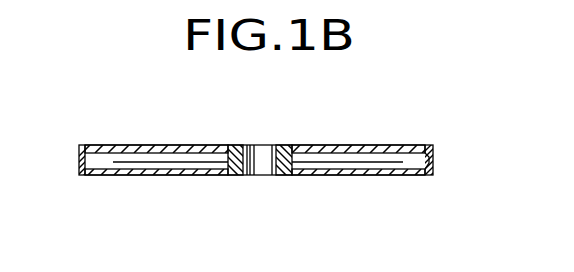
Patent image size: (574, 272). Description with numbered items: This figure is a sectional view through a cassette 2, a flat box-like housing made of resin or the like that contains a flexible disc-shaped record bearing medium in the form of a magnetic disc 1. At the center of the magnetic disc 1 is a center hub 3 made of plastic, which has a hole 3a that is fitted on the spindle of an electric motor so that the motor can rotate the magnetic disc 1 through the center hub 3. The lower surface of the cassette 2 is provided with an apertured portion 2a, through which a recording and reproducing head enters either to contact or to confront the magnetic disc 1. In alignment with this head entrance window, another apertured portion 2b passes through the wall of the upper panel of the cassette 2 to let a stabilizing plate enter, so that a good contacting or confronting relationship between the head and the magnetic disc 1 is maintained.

The magnetic disc 1 is at (123, 162).
The cassette 2 is at (433, 160).
The apertured portion 2a is at (359, 170).
The apertured portion 2b is at (357, 152).
The center hub 3 is at (280, 147).
The hole 3a is at (263, 147).